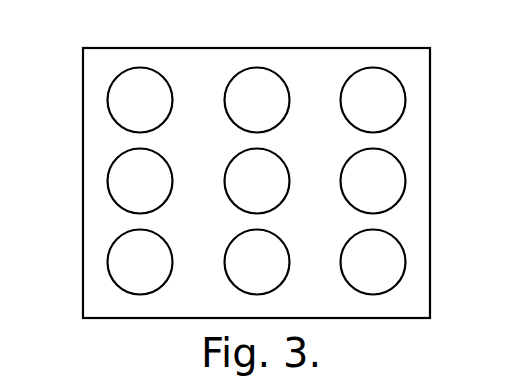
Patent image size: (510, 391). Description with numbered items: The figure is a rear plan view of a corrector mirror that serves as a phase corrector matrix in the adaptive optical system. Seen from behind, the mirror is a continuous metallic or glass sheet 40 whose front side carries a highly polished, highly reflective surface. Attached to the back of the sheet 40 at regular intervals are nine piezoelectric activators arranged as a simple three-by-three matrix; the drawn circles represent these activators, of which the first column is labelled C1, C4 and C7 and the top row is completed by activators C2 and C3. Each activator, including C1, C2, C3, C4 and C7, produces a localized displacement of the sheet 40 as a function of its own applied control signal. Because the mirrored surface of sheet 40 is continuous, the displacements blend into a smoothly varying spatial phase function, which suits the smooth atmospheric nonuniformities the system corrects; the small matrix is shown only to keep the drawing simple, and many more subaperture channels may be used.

The continuous metallic or glass sheet 40 is at (124, 48).
The activator C1 is at (107, 99).
The activator C2 is at (248, 68).
The activator C3 is at (371, 68).
The activator C4 is at (107, 181).
The activator C7 is at (107, 264).